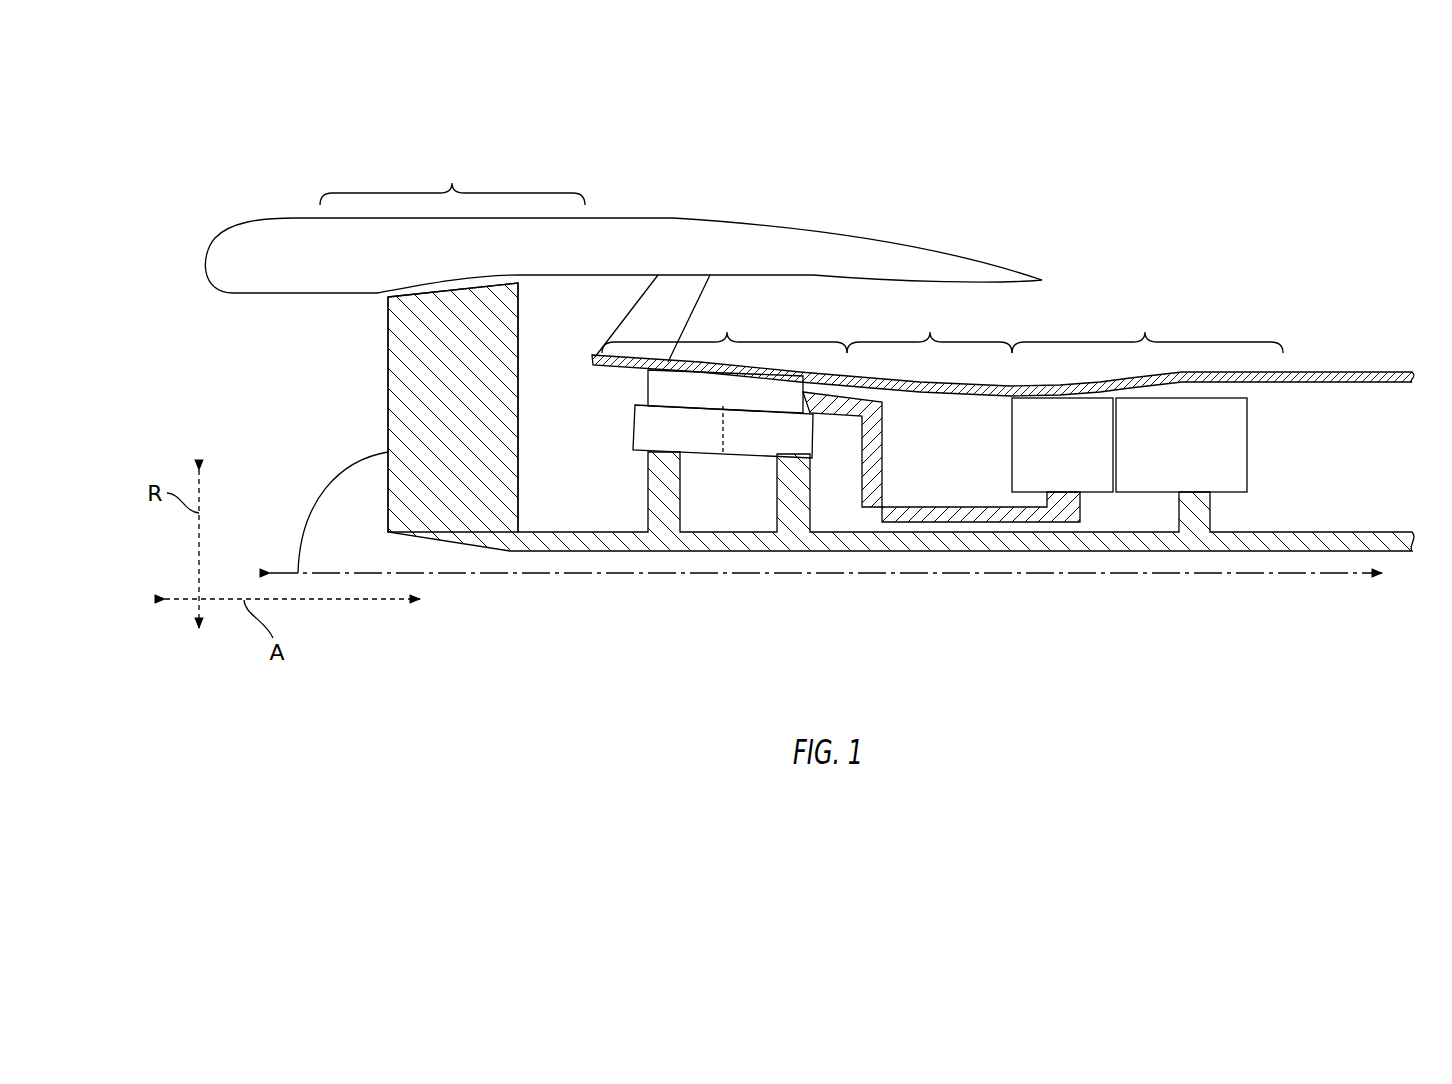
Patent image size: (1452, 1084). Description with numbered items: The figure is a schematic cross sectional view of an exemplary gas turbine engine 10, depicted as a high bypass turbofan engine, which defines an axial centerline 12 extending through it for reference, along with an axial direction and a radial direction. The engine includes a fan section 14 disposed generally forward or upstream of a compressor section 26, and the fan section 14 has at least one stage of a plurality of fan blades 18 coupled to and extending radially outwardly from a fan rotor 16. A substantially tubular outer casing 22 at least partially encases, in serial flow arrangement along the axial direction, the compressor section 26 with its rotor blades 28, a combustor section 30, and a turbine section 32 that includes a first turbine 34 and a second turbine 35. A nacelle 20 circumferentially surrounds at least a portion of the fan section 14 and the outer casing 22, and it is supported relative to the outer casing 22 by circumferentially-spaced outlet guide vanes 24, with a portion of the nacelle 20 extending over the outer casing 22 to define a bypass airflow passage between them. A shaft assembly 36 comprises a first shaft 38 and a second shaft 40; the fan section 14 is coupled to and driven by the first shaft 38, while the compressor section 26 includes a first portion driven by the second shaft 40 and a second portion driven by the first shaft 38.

The gas turbine engine 10 is at (855, 152).
The axial centerline 12 is at (1200, 573).
The fan section 14 is at (452, 181).
The fan rotor 16 is at (313, 521).
The fan blades 18 is at (388, 403).
The nacelle 20 is at (670, 218).
The outer casing 22 is at (597, 358).
The outlet guide vanes 24 is at (638, 316).
The compressor section 26 is at (724, 330).
The rotor blades 28 is at (702, 458).
The combustor section 30 is at (929, 330).
The turbine section 32 is at (1147, 330).
The first turbine 34 is at (1012, 450).
The second turbine 35 is at (1247, 470).
The shaft assembly 36 is at (968, 556).
The first shaft 38 is at (870, 552).
The second shaft 40 is at (909, 507).